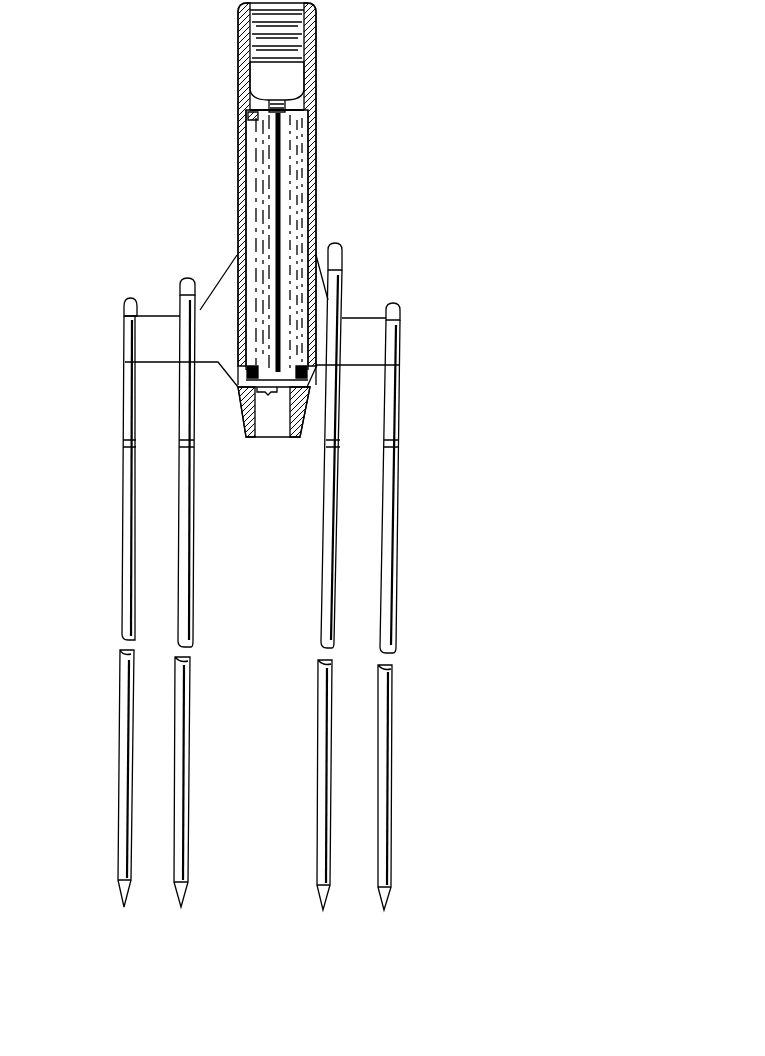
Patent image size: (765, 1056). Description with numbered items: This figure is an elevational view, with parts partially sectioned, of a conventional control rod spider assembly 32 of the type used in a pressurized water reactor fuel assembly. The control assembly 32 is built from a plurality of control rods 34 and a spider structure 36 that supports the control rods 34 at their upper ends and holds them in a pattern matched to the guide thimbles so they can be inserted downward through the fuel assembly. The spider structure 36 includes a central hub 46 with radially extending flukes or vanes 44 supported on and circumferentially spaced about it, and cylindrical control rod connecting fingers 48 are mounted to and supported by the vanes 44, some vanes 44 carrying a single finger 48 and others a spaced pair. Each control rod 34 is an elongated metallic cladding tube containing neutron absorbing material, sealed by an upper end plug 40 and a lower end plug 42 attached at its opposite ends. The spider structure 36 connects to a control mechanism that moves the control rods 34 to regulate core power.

The control rod spider assembly 32 is at (428, 216).
The control rods 34 is at (178, 555).
The spider structure 36 is at (318, 200).
The upper end plug 40 is at (178, 373).
The lower end plug 42 is at (180, 903).
The vanes 44 is at (163, 312).
The central hub 46 is at (238, 163).
The control rod connecting fingers 48 is at (178, 328).